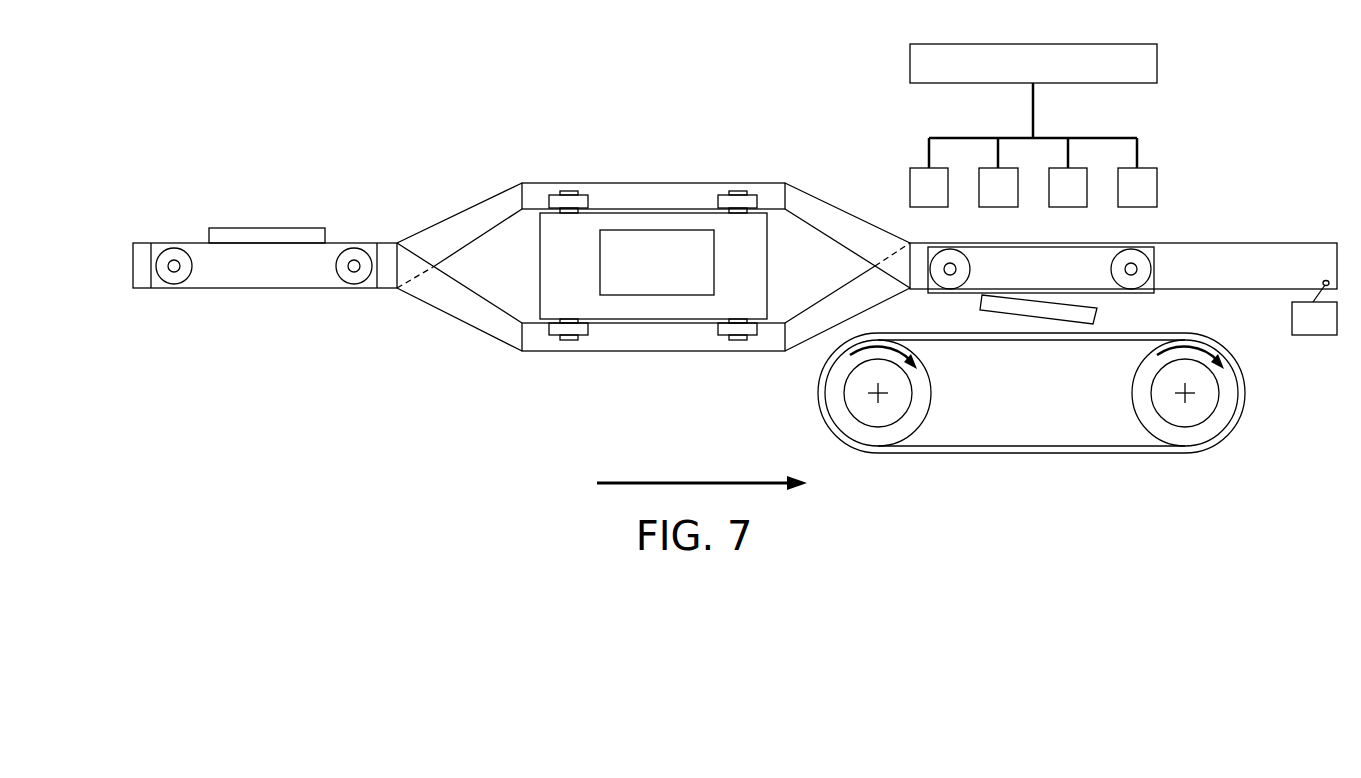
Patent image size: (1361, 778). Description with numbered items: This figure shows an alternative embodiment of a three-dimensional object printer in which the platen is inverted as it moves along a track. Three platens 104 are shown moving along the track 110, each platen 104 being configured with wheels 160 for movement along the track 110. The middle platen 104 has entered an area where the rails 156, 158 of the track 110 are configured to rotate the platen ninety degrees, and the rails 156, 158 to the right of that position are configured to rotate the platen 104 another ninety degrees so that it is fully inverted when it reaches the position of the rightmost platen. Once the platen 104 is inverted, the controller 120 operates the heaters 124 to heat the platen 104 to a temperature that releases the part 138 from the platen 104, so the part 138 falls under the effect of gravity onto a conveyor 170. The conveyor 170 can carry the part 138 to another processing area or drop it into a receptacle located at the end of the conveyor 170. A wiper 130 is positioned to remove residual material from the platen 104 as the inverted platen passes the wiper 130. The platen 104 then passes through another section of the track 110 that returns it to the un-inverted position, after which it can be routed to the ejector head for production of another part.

The platen 104 is at (338, 243).
The track 110 is at (660, 182).
The controller 120 is at (1157, 63).
The heaters 124 is at (980, 165).
The wiper 130 is at (1308, 262).
The part 138 is at (268, 228).
The rail 156 is at (460, 322).
The rail 158 is at (460, 210).
The wheels 160 is at (343, 282).
The conveyor 170 is at (1020, 453).